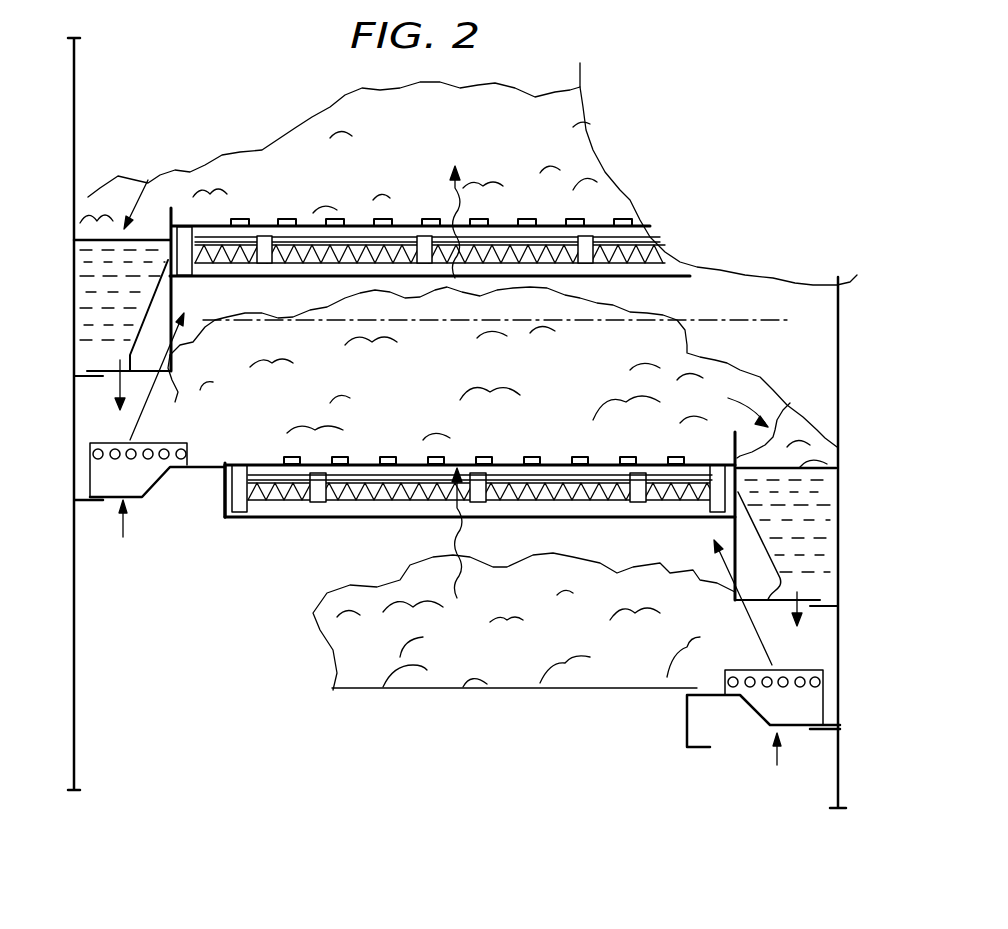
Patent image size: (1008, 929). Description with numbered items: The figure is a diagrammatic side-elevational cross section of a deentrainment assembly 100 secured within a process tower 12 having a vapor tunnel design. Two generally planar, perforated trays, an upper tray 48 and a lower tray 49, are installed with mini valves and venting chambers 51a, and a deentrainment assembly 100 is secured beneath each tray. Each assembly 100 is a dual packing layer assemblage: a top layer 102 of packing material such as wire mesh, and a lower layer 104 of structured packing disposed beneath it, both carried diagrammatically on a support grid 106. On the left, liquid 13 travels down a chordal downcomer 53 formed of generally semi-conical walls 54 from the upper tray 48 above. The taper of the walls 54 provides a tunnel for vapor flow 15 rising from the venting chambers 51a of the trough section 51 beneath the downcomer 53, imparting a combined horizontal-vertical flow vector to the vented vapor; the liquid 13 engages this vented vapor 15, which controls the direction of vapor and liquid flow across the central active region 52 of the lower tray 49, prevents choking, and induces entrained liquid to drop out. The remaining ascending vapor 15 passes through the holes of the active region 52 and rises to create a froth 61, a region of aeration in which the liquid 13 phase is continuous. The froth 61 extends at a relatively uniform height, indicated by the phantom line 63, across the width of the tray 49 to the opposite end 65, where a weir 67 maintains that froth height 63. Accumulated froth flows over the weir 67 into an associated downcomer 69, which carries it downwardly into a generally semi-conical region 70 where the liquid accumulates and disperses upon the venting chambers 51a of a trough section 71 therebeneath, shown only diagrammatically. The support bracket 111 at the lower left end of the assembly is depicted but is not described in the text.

The tower 12 is at (840, 325).
The liquid 13 is at (150, 195).
The vapor flow 15 is at (143, 390).
The upper tray 48 is at (607, 233).
The lower tray 49 is at (550, 480).
The trough section 51 is at (146, 478).
The venting chambers 51a is at (100, 473).
The active region 52 is at (390, 457).
The chordal downcomer 53 is at (78, 289).
The semi-conical walls 54 is at (172, 307).
The froth 61 is at (539, 96).
The froth height line 63 is at (598, 321).
The opposite end 65 is at (648, 462).
The weir 67 is at (790, 403).
The downcomer 69 is at (830, 553).
The semi-conical region 70 is at (770, 600).
The trough section 71 is at (837, 695).
The deentrainment assembly 100 is at (675, 236).
The top layer 102 is at (290, 242).
The lower layer 104 is at (299, 257).
The support grid 106 is at (657, 262).
The support bracket 111 is at (224, 517).